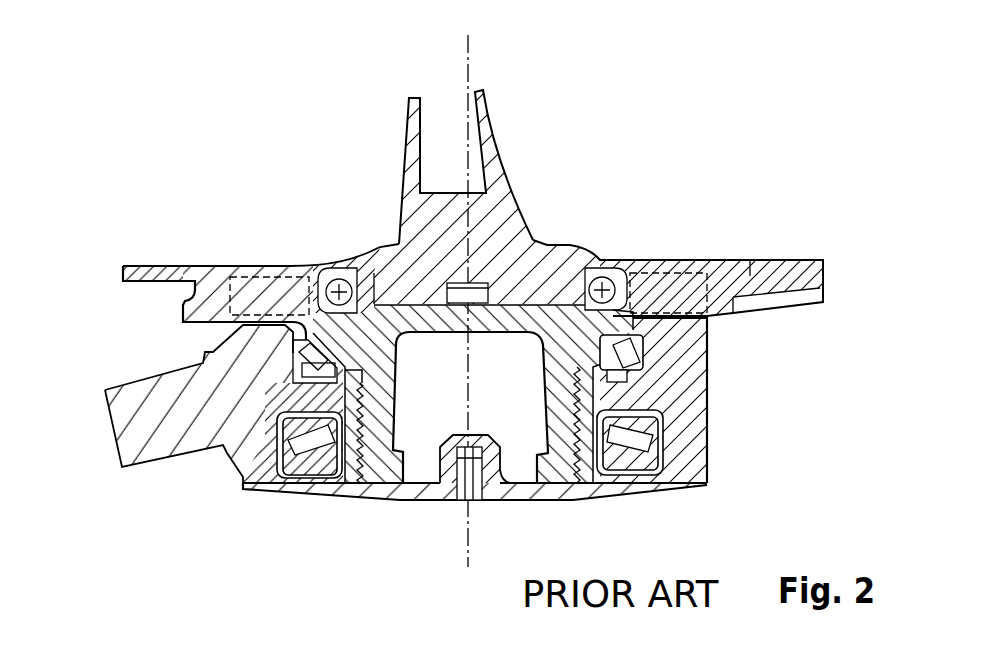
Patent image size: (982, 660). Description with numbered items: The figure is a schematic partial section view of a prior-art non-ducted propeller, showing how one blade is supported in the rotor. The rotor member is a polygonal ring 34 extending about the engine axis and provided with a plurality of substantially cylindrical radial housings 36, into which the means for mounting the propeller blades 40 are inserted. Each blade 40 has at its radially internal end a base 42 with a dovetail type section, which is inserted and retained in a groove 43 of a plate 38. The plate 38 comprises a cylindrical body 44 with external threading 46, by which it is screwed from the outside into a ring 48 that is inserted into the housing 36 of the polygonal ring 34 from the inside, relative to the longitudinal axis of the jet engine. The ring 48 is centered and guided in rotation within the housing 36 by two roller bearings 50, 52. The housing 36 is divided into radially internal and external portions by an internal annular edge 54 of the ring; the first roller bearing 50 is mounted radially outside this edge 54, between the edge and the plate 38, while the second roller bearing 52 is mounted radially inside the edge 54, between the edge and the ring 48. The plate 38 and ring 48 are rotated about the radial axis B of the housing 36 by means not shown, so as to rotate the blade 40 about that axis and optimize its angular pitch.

The radial axis B is at (468, 62).
The polygonal ring 34 is at (113, 442).
The radial housing 36 is at (462, 449).
The plate 38 is at (258, 261).
The propeller blade 40 is at (504, 148).
The base 42 is at (516, 238).
The groove 43 is at (557, 291).
The cylindrical body 44 is at (557, 353).
The external threading 46 is at (573, 410).
The ring 48 is at (325, 463).
The first roller bearing 50 is at (633, 353).
The second roller bearing 52 is at (633, 437).
The internal annular edge 54 is at (317, 400).